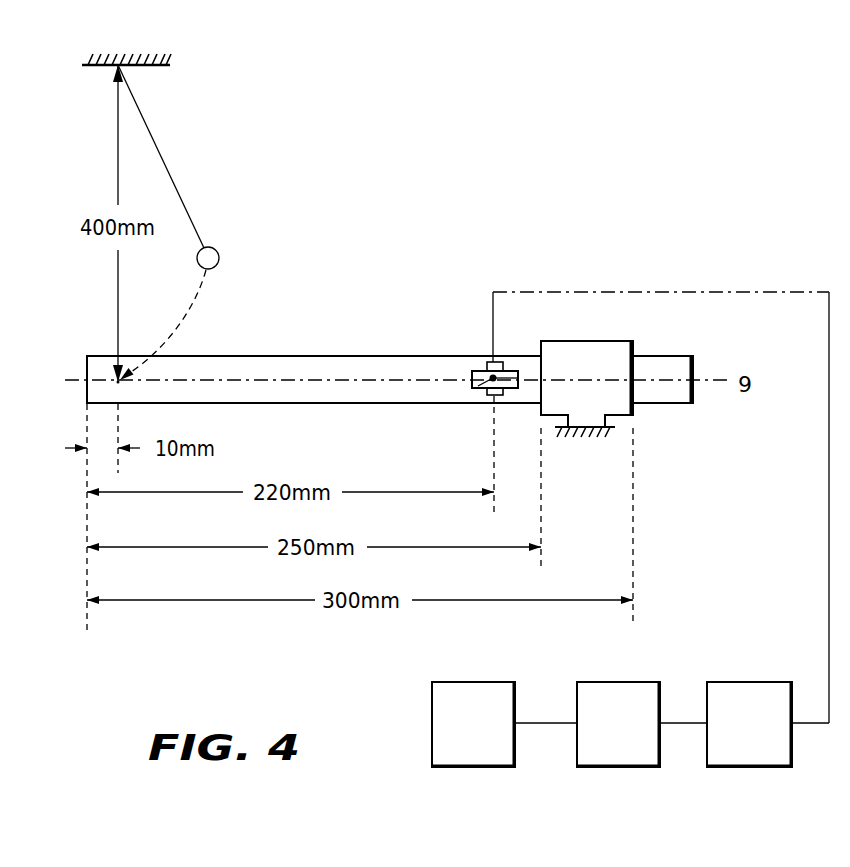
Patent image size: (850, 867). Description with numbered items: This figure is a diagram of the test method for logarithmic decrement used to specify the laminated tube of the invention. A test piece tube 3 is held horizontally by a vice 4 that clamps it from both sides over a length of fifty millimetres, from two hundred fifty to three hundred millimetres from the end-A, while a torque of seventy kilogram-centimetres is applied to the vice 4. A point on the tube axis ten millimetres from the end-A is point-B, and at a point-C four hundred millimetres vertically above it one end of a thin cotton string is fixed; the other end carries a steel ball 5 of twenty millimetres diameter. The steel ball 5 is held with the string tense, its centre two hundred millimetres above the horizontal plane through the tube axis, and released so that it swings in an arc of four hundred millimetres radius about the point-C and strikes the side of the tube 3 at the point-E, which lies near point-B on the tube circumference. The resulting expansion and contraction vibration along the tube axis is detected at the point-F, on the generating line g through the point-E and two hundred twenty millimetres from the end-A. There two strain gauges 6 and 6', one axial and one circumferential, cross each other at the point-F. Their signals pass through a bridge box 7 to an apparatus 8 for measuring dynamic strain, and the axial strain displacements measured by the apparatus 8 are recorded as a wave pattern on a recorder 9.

The point- C is at (114, 68).
The steel ball 5 is at (216, 255).
The end- A is at (100, 354).
The point- E is at (120, 382).
The test piece tube 3 is at (309, 394).
The strain gauge 6 is at (468, 354).
The strain gauge 6' is at (480, 326).
The point- F is at (476, 394).
The vice 4 is at (632, 340).
The recorder 9 is at (485, 755).
The apparatus for measuring dynamic strain 8 is at (606, 755).
The bridge box 7 is at (743, 755).